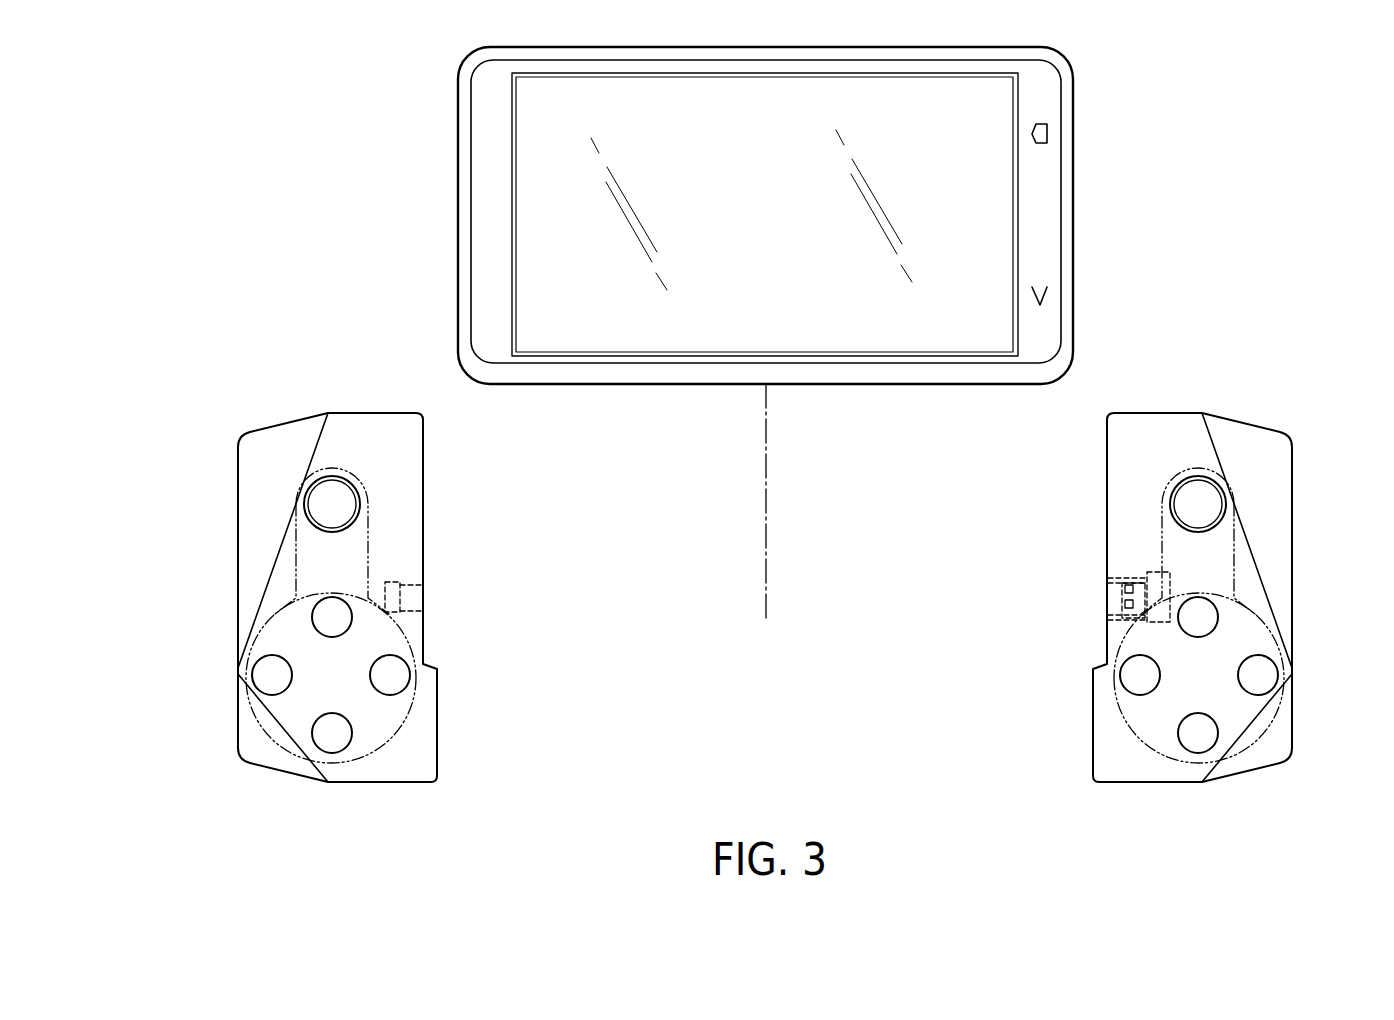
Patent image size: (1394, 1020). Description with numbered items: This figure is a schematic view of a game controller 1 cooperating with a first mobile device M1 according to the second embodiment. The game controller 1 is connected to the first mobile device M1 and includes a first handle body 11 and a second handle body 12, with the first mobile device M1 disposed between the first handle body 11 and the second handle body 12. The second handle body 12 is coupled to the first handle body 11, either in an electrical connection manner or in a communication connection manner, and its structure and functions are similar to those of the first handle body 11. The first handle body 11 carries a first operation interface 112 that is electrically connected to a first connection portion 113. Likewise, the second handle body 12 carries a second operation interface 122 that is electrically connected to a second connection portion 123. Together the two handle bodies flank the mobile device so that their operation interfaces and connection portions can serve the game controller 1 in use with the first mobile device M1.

The game controller 1 is at (1300, 217).
The first handle body 11 is at (337, 576).
The second handle body 12 is at (1192, 576).
The first operation interface 112 is at (296, 552).
The first connection portion 113 is at (415, 597).
The second operation interface 122 is at (1234, 552).
The second connection portion 123 is at (1115, 597).
The first mobile device M1 is at (1073, 213).